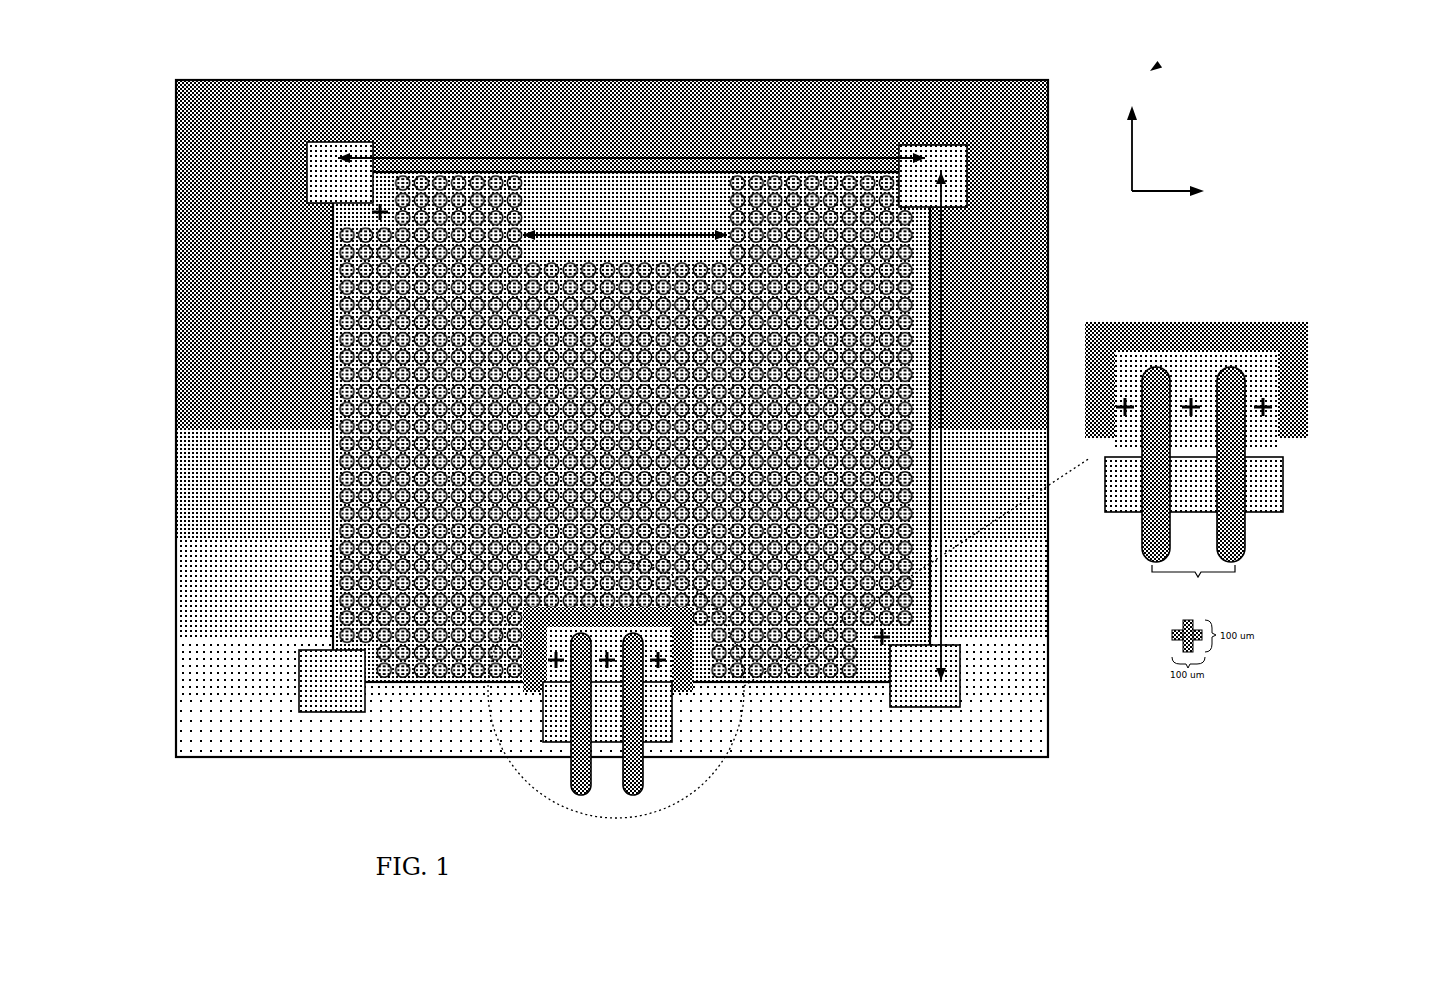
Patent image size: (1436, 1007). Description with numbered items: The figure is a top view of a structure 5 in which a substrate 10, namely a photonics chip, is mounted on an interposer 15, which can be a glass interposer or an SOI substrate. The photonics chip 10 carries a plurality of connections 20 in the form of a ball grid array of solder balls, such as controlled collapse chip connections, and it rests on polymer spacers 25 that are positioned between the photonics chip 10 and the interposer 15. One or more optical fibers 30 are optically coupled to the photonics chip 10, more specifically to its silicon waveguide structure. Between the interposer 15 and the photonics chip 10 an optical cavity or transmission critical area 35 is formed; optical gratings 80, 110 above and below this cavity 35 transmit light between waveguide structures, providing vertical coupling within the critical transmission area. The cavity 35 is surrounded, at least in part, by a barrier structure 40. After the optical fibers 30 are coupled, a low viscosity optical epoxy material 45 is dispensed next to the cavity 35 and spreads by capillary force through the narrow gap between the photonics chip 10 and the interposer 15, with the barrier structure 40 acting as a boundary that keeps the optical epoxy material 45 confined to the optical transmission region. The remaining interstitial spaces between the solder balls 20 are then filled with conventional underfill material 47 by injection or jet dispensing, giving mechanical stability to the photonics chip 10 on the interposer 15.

The structure 5 is at (1152, 70).
The substrate 10 is at (853, 192).
The interposer 15 is at (992, 120).
The plurality of connections 20 is at (770, 187).
The polymer spacers 25 is at (922, 165).
The optical fibers 30 is at (645, 778).
The optical cavity/transmission critical area 35 is at (660, 683).
The barrier structure 40 is at (530, 683).
The optical epoxy material 45 is at (556, 640).
The underfill material 47 is at (550, 210).
The optical grating 80 is at (665, 662).
The optical grating 110 is at (1262, 408).